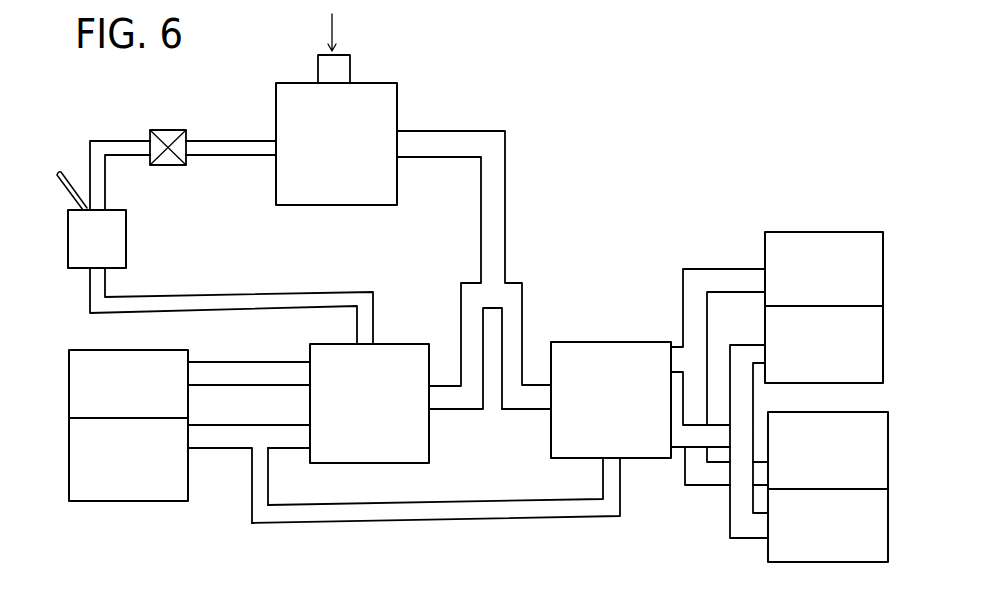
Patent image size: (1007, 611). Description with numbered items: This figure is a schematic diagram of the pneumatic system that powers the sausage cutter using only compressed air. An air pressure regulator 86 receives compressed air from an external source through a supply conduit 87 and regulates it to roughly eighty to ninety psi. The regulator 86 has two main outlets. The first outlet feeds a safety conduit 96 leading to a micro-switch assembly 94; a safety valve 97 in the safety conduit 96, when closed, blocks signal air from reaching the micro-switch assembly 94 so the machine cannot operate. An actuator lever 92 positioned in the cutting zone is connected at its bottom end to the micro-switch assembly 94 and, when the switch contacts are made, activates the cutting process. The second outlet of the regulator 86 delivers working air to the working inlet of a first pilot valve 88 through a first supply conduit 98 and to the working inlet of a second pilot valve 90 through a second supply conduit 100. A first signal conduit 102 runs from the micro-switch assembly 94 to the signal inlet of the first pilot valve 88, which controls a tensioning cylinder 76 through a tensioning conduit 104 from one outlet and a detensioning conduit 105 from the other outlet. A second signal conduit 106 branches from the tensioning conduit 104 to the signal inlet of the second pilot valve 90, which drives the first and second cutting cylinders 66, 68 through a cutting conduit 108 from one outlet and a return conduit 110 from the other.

The first cutting cylinder 66 is at (777, 238).
The second cutting cylinder 68 is at (792, 556).
The tensioning cylinder 76 is at (74, 378).
The air pressure regulator 86 is at (388, 90).
The supply conduit 87 is at (346, 65).
The first pilot valve 88 is at (378, 348).
The second pilot valve 90 is at (564, 347).
The actuator lever 92 is at (56, 179).
The micro-switch assembly 94 is at (118, 241).
The safety conduit 96 is at (196, 143).
The safety valve 97 is at (170, 162).
The first supply conduit 98 is at (461, 290).
The second supply conduit 100 is at (522, 289).
The first signal conduit 102 is at (178, 301).
The tensioning conduit 104 is at (239, 445).
The detensioning conduit 105 is at (199, 368).
The second signal conduit 106 is at (386, 514).
The cutting conduit 108 is at (737, 518).
The return conduit 110 is at (726, 274).